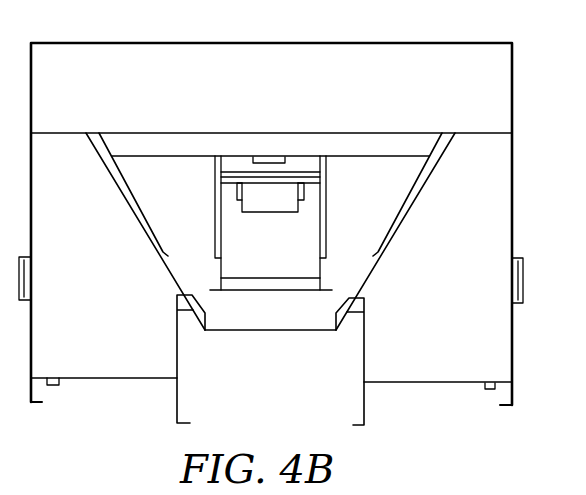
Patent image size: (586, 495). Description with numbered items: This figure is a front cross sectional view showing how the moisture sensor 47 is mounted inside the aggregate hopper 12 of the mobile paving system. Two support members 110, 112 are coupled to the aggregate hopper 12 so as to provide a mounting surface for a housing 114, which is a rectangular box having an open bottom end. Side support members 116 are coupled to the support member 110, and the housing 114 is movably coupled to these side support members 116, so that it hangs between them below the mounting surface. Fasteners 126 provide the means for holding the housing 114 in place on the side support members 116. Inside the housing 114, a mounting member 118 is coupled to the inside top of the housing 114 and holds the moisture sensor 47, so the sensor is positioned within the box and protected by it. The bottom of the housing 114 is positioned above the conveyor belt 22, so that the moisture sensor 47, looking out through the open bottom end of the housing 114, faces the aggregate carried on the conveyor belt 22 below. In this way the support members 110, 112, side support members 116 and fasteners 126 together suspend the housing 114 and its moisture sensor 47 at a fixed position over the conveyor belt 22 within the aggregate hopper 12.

The aggregate hopper 12 is at (91, 87).
The support member 110 is at (371, 134).
The support member 112 is at (267, 156).
The fasteners 126 is at (215, 197).
The side support members 116 is at (215, 245).
The moisture sensor 47 is at (262, 212).
The mounting member 118 is at (300, 212).
The housing 114 is at (322, 268).
The conveyor belt 22 is at (283, 331).